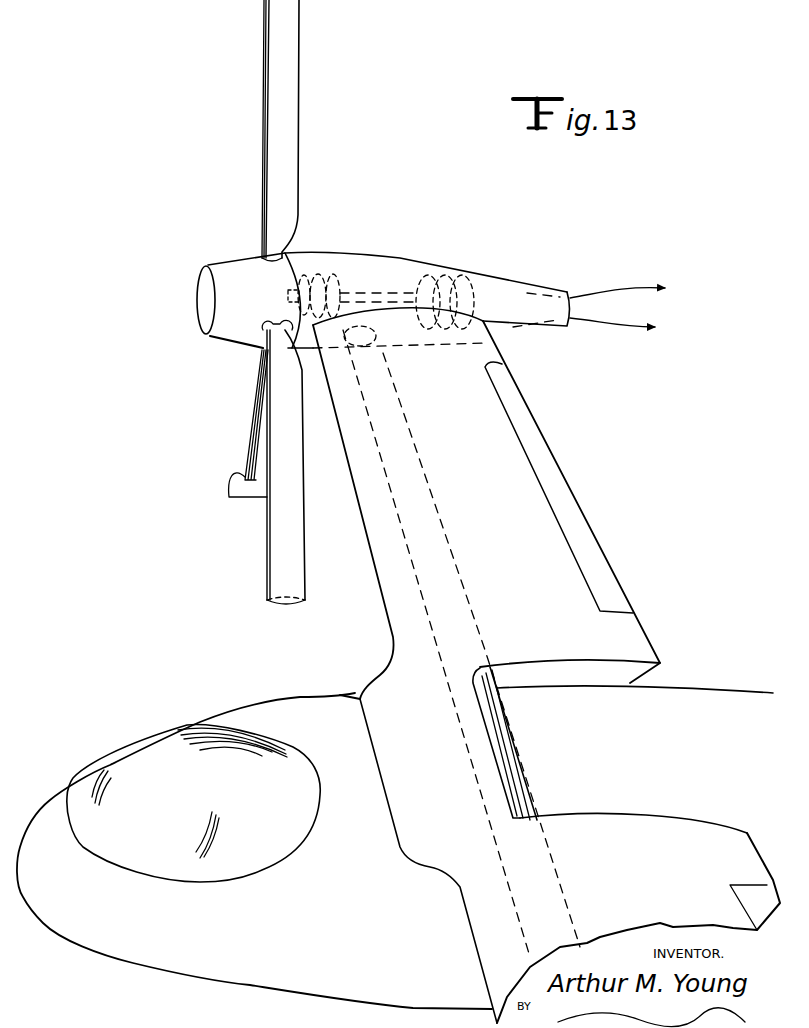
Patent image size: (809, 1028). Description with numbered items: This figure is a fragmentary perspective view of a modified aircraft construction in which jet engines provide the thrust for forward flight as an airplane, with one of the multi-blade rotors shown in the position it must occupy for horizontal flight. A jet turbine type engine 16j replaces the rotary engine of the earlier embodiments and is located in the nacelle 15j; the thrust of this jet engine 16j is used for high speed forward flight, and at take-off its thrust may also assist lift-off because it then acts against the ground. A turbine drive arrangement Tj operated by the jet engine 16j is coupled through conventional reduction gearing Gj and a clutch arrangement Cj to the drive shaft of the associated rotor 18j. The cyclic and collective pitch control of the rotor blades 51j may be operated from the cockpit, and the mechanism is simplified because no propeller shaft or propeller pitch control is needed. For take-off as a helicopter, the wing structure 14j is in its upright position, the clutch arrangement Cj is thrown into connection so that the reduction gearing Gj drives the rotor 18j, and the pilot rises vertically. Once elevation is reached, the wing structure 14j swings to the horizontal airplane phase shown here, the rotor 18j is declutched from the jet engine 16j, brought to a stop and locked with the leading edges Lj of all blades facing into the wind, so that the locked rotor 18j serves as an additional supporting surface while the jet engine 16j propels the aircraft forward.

The wing structure 14j is at (508, 467).
The nacelle 15j is at (500, 282).
The jet turbine type engine 16j is at (400, 265).
The rotor 18j is at (258, 178).
The rotor blade 51j is at (277, 553).
The turbine drive arrangement Tj is at (456, 275).
The reduction gearing Gj is at (338, 278).
The clutch arrangement Cj is at (300, 283).
The leading edge Lj is at (265, 42).